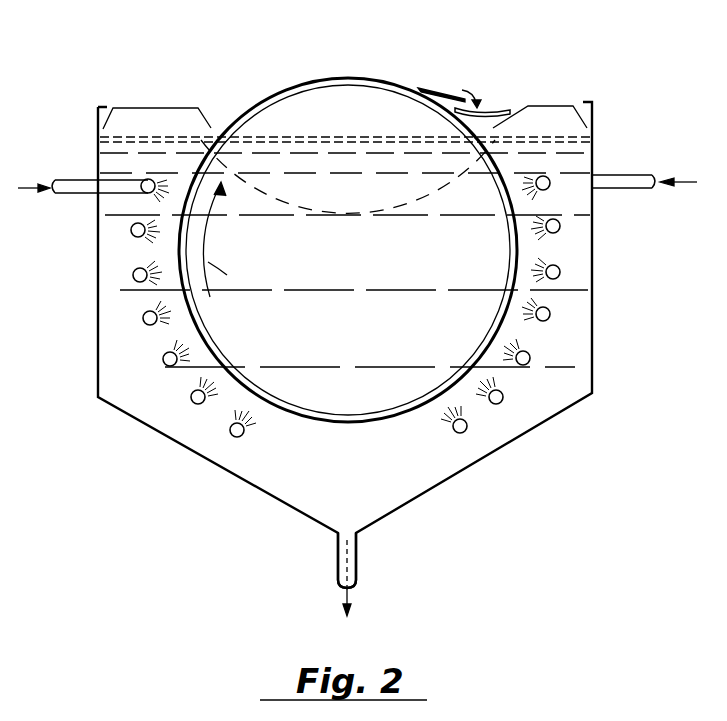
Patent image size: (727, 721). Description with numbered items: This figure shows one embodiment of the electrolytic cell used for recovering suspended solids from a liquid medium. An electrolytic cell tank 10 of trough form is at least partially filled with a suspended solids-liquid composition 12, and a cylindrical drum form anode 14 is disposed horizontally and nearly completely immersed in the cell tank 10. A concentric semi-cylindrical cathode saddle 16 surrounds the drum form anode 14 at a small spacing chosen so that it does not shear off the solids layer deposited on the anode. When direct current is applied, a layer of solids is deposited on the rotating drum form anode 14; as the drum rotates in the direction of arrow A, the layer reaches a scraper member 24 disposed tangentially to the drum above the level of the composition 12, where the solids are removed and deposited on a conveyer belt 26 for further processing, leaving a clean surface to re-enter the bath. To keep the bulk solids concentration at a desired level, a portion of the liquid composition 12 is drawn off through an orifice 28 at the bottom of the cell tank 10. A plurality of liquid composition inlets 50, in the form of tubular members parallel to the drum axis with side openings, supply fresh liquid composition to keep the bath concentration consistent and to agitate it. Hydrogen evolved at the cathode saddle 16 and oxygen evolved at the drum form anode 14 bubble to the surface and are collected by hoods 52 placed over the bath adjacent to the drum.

The electrolytic cell tank 10 is at (528, 437).
The suspended solids-liquid composition 12 is at (545, 397).
The drum form anode 14 is at (308, 79).
The cathode saddle 16 is at (305, 432).
The scraper member 24 is at (434, 92).
The conveyer belt 26 is at (493, 110).
The orifice 28 is at (358, 562).
The liquid composition inlets 50 is at (80, 197).
The hoods 52 is at (140, 107).